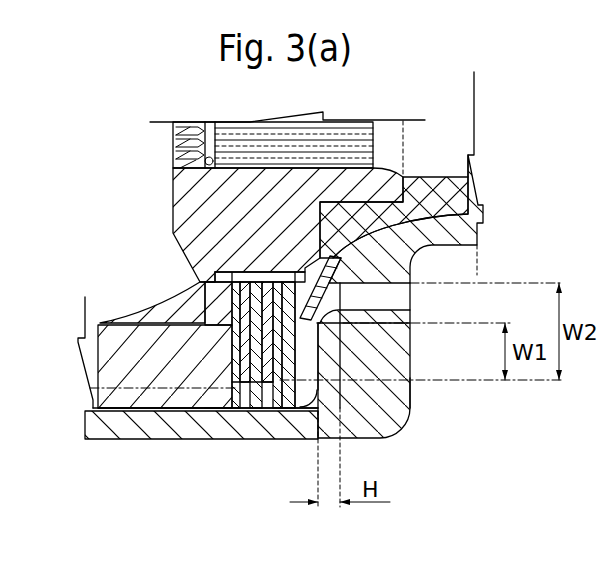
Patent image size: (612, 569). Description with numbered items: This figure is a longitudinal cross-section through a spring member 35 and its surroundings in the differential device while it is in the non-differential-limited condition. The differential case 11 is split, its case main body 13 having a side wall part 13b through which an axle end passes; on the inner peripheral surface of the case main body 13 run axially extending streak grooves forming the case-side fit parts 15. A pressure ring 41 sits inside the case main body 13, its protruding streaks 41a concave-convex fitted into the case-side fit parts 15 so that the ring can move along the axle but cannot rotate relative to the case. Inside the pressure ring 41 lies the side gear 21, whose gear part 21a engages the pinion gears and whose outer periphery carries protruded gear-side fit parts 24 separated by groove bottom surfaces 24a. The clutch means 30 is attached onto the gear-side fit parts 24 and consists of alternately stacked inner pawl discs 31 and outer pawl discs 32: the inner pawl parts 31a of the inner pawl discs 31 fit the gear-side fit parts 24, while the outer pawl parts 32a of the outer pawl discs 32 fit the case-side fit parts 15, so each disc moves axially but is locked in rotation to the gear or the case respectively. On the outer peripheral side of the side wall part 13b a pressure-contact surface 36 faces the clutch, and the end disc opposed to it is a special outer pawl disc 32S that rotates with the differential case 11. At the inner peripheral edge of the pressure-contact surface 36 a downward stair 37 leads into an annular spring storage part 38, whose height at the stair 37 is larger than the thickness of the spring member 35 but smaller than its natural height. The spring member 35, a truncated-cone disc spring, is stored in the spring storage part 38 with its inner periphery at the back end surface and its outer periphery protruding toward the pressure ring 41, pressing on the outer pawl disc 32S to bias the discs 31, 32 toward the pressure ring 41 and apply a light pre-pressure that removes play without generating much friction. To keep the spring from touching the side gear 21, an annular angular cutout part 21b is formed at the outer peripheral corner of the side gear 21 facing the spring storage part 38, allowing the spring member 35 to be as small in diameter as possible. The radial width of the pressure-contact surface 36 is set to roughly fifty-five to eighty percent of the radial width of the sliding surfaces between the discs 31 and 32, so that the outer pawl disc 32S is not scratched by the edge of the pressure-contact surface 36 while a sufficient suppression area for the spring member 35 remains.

The differential case 11 is at (427, 424).
The case main body 13 is at (124, 440).
The side wall part 13b is at (412, 392).
The case-side fit parts 15 is at (92, 404).
The side gear 21 is at (167, 152).
The gear part 21a is at (178, 212).
The cutout part 21b is at (340, 257).
The gear-side fit parts 24 is at (222, 283).
The groove bottom surface 24a is at (205, 271).
The clutch means 30 is at (231, 449).
The inner pawl disc 31 is at (236, 406).
The inner pawl parts 31a is at (232, 268).
The outer pawl disc 32 is at (236, 372).
The outer pawl parts 32a is at (262, 409).
The outer pawl disc 32S is at (282, 410).
The spring member 35 is at (455, 210).
The pressure-contact surface 36 is at (318, 412).
The stair 37 is at (412, 307).
The spring storage part 38 is at (416, 268).
The pressure ring 41 is at (105, 376).
The protruding streaks 41a is at (158, 412).